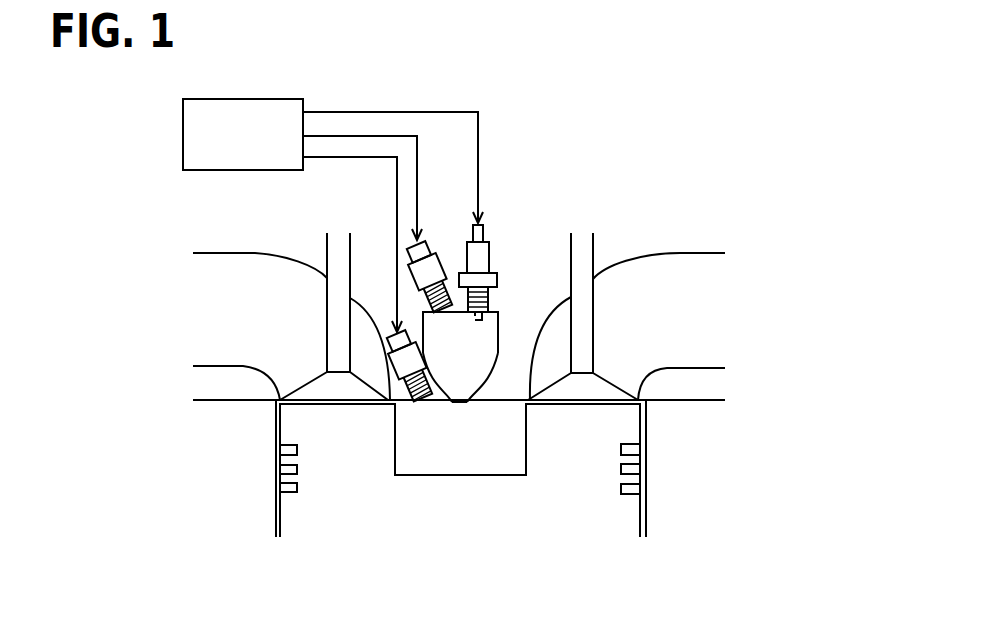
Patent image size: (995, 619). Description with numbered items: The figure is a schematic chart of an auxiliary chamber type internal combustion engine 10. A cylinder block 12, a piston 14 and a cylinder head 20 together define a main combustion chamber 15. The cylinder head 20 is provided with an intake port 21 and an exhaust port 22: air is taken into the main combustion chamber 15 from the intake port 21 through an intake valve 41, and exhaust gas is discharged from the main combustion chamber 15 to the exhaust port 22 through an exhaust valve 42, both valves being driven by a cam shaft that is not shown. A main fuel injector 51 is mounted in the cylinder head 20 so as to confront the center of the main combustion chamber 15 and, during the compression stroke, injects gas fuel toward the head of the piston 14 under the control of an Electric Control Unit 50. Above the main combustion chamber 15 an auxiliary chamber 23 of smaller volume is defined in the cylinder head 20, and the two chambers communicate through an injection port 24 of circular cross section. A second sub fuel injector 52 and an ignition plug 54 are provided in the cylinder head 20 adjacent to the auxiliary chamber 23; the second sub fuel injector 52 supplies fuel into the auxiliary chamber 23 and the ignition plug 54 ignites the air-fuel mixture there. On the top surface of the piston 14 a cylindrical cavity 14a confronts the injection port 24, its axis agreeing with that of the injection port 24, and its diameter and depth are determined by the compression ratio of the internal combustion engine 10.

The internal combustion engine 10 is at (810, 107).
The cylinder block 12 is at (693, 437).
The piston 14 is at (610, 510).
The cavity 14a is at (488, 477).
The main combustion chamber 15 is at (435, 432).
The cylinder head 20 is at (690, 387).
The intake port 21 is at (208, 254).
The exhaust port 22 is at (716, 254).
The auxiliary chamber 23 is at (488, 352).
The injection port 24 is at (465, 392).
The intake valve 41 is at (327, 250).
The exhaust valve 42 is at (593, 250).
The Electric Control Unit (ECU) 50 is at (289, 98).
The main fuel injector 51 is at (390, 333).
The second sub fuel injector 52 is at (430, 244).
The ignition plug 54 is at (489, 261).